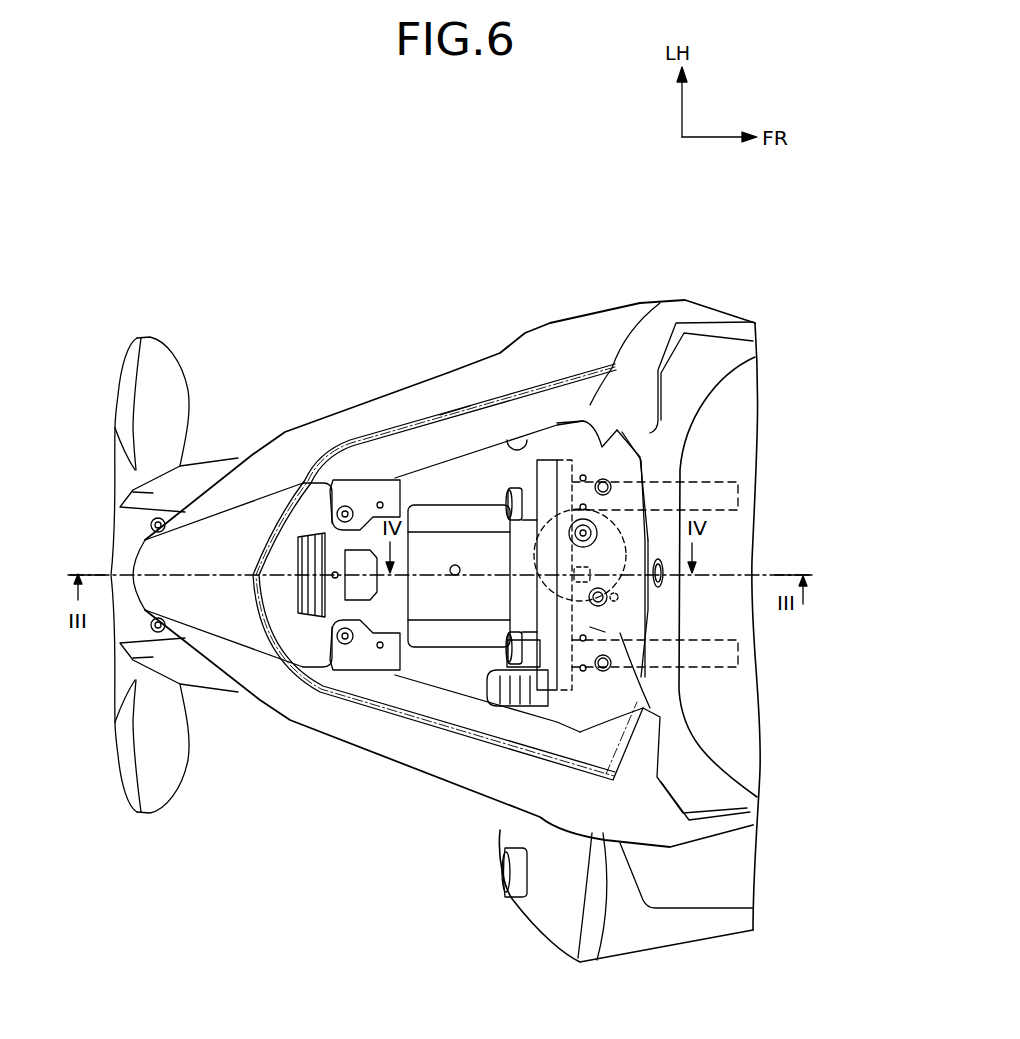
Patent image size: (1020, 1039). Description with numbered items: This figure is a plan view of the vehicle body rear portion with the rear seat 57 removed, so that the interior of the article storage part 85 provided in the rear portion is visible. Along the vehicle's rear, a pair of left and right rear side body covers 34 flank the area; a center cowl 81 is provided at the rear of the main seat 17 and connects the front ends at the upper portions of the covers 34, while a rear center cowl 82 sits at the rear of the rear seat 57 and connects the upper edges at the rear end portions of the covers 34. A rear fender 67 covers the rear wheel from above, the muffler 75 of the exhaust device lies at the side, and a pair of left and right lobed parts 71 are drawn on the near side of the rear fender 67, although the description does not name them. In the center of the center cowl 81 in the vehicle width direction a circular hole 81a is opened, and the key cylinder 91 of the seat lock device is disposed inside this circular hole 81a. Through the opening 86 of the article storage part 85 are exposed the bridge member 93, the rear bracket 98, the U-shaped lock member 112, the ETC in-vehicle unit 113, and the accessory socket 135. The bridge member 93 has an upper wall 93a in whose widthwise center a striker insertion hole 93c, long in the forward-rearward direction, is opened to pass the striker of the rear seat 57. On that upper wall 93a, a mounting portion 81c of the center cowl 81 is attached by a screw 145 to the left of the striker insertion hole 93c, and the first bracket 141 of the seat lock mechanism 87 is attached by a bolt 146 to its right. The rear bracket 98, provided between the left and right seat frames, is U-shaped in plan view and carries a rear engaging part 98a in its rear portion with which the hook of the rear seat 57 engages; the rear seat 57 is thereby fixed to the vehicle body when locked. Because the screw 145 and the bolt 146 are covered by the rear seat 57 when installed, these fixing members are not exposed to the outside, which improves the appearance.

The main seat 17 is at (748, 745).
The rear side body cover 34 is at (307, 443).
The rear seat 57 is at (457, 412).
The rear fender 67 is at (120, 557).
The handle grip 71 is at (150, 360).
The muffler 75 is at (543, 925).
The center cowl 81 is at (700, 347).
The circular hole 81a is at (660, 560).
The mounting portion 81c is at (615, 528).
The rear center cowl 82 is at (232, 620).
The article storage part 85 is at (443, 473).
The opening 86 is at (523, 440).
The seat lock mechanism 87 is at (590, 627).
The key cylinder 91 is at (668, 580).
The bridge member 93 is at (601, 445).
The upper wall 93a is at (580, 437).
The striker insertion hole 93c is at (665, 565).
The rear bracket 98 is at (307, 443).
The rear engaging part 98a is at (312, 550).
The U-shaped lock member 112 is at (727, 482).
The ETC in-vehicle unit 113 is at (443, 613).
The accessory socket 135 is at (527, 675).
The first bracket 141 is at (648, 672).
The screw 145 is at (583, 533).
The bolt 146 is at (615, 597).